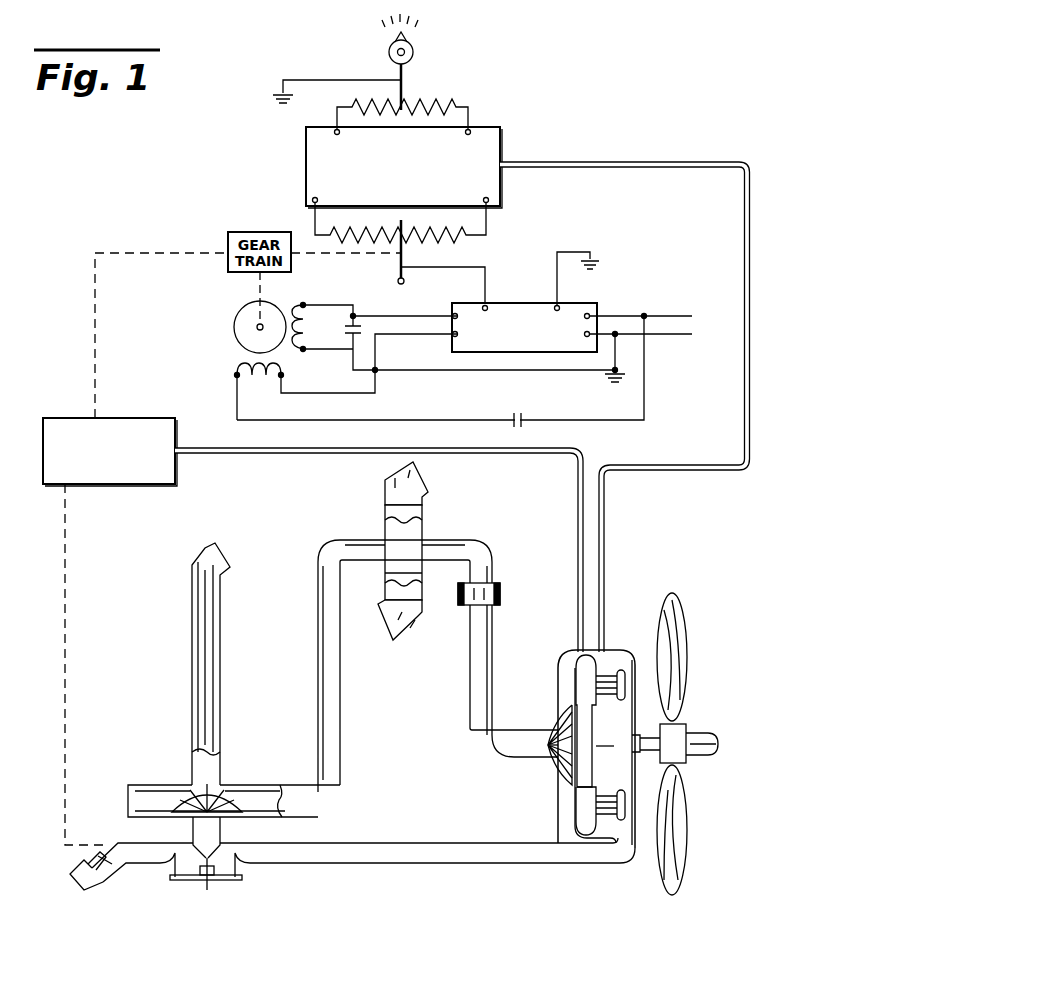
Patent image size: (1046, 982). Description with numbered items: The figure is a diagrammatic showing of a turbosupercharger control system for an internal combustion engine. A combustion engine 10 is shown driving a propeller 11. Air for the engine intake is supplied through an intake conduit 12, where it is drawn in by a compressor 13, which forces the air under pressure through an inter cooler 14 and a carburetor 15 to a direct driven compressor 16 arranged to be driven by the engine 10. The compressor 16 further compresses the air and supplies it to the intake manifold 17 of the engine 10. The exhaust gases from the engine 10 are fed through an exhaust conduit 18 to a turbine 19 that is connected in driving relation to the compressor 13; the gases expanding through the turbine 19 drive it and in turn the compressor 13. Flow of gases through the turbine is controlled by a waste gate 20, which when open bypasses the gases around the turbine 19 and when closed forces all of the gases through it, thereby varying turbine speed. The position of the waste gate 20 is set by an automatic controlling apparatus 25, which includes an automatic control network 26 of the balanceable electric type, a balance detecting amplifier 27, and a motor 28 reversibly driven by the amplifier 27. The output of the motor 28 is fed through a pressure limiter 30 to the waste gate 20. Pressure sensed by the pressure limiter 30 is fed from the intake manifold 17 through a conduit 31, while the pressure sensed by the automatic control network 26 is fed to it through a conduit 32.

The combustion engine 10 is at (599, 749).
The propeller 11 is at (684, 735).
The intake conduit 12 is at (220, 632).
The compressor 13 is at (213, 793).
The inter cooler 14 is at (405, 632).
The carburetor 15 is at (500, 596).
The direct driven compressor 16 is at (557, 763).
The intake manifold 17 is at (562, 668).
The exhaust conduit 18 is at (443, 862).
The turbine 19 is at (228, 880).
The waste gate 20 is at (108, 880).
The automatic controlling apparatus 25 is at (262, 182).
The automatic control network 26 is at (503, 191).
The amplifier 27 is at (508, 303).
The motor 28 is at (224, 331).
The pressure limiter 30 is at (153, 417).
The conduit 31 is at (297, 455).
The conduit 32 is at (751, 428).